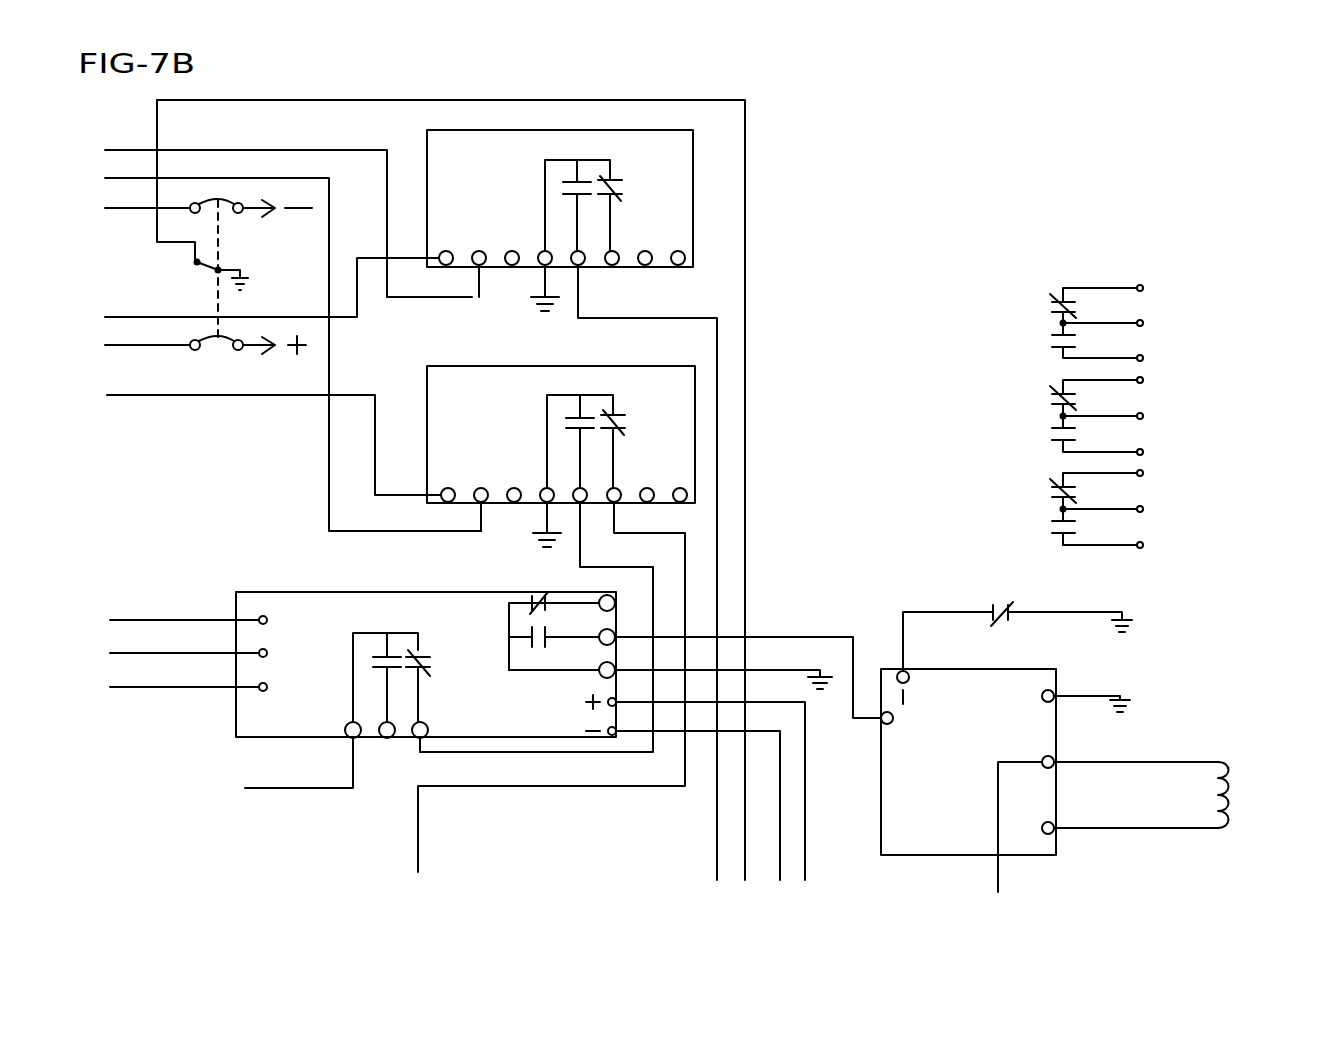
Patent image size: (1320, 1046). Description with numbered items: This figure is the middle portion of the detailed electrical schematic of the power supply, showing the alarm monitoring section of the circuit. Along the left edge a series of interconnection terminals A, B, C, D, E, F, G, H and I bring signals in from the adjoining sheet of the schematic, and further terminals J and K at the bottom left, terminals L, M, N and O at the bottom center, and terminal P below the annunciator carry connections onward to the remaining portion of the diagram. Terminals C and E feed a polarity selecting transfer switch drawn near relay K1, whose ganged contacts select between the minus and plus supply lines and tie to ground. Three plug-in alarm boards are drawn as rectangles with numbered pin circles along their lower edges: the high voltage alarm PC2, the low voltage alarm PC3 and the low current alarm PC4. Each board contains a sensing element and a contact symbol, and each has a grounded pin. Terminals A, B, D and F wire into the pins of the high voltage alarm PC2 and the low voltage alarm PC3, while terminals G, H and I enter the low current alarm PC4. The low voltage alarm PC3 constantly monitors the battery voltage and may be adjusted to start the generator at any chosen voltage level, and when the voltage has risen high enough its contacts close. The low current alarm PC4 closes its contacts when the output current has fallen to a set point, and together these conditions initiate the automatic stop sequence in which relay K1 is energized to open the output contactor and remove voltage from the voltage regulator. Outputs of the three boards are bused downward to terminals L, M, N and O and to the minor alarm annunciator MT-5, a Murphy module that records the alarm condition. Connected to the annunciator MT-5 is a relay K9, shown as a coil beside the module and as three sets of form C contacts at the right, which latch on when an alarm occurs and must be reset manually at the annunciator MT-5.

The high voltage alarm PC2 is at (572, 505).
The low voltage alarm PC3 is at (556, 619).
The low current alarm PC4 is at (558, 736).
The alarm annunciator MT-5 is at (1006, 747).
The alarm annunciator relay K9 is at (1157, 552).
The relay K1 is at (208, 276).
The terminal A is at (101, 144).
The terminal B is at (101, 172).
The terminal C is at (101, 202).
The terminal D is at (101, 311).
The terminal E is at (101, 339).
The terminal F is at (103, 389).
The terminal G is at (106, 614).
The terminal H is at (106, 647).
The terminal I is at (106, 681).
The terminal J is at (241, 782).
The terminal K is at (425, 870).
The terminal L is at (724, 878).
The terminal M is at (752, 878).
The terminal N is at (787, 878).
The terminal O is at (812, 878).
The terminal P is at (1006, 892).